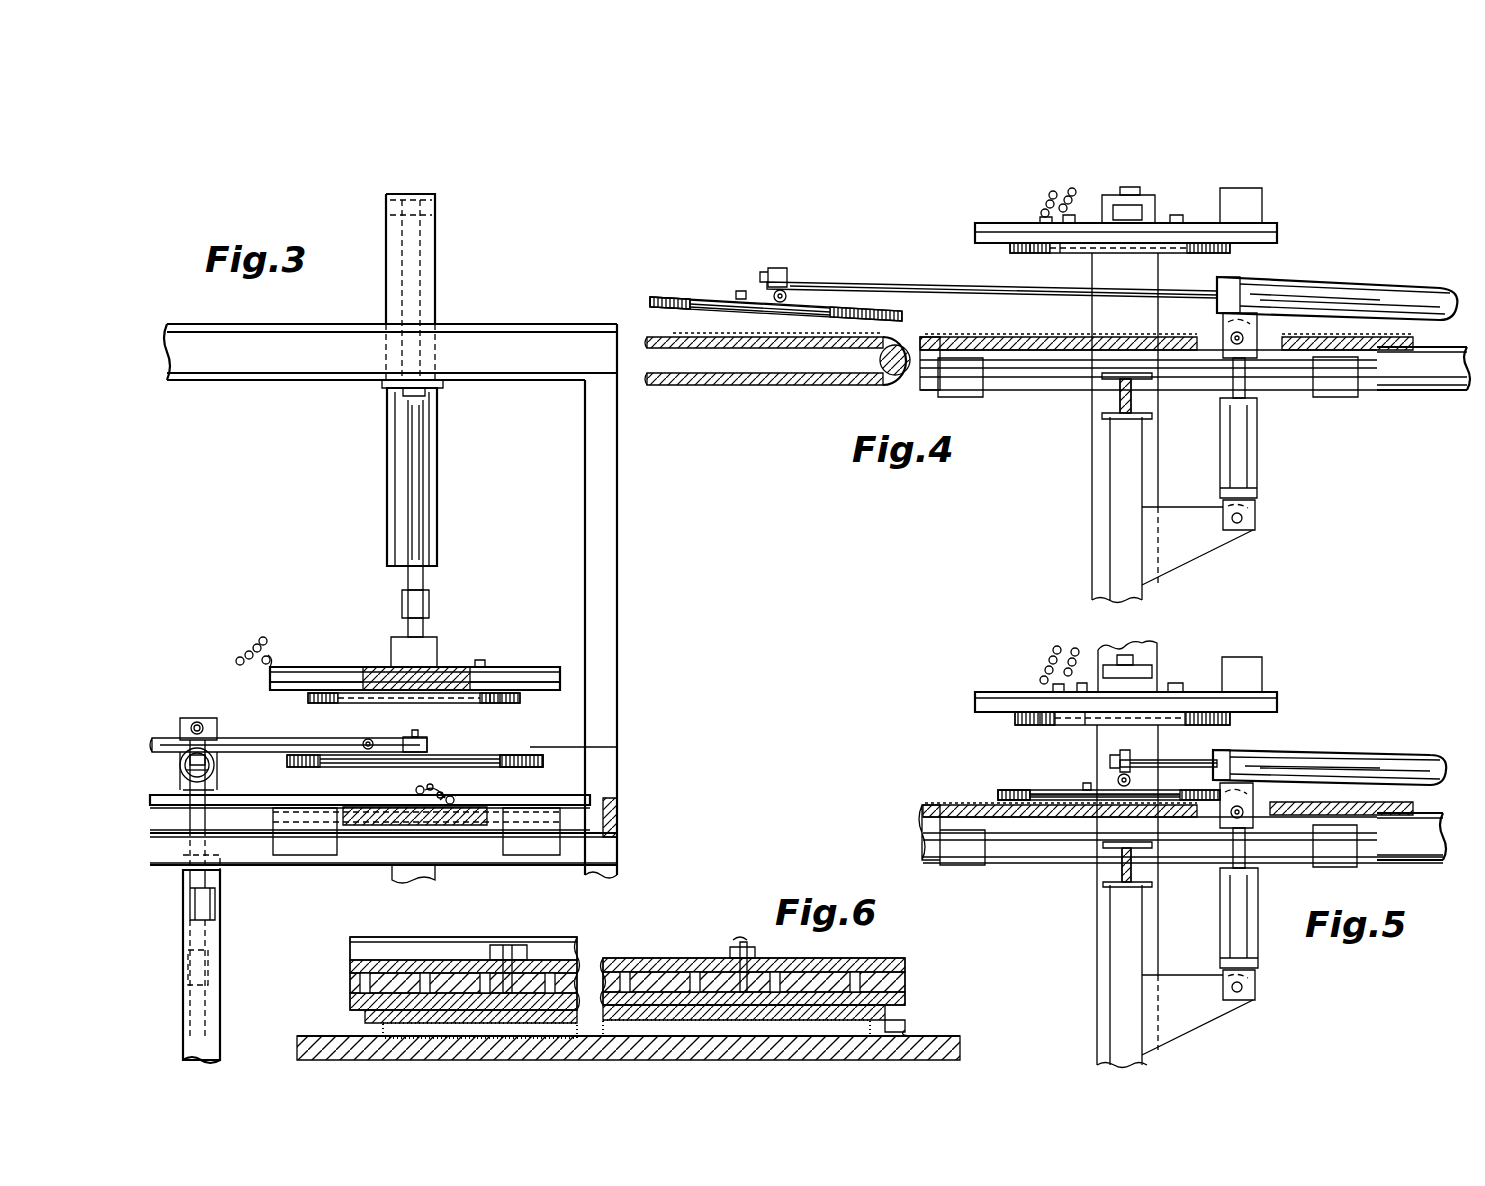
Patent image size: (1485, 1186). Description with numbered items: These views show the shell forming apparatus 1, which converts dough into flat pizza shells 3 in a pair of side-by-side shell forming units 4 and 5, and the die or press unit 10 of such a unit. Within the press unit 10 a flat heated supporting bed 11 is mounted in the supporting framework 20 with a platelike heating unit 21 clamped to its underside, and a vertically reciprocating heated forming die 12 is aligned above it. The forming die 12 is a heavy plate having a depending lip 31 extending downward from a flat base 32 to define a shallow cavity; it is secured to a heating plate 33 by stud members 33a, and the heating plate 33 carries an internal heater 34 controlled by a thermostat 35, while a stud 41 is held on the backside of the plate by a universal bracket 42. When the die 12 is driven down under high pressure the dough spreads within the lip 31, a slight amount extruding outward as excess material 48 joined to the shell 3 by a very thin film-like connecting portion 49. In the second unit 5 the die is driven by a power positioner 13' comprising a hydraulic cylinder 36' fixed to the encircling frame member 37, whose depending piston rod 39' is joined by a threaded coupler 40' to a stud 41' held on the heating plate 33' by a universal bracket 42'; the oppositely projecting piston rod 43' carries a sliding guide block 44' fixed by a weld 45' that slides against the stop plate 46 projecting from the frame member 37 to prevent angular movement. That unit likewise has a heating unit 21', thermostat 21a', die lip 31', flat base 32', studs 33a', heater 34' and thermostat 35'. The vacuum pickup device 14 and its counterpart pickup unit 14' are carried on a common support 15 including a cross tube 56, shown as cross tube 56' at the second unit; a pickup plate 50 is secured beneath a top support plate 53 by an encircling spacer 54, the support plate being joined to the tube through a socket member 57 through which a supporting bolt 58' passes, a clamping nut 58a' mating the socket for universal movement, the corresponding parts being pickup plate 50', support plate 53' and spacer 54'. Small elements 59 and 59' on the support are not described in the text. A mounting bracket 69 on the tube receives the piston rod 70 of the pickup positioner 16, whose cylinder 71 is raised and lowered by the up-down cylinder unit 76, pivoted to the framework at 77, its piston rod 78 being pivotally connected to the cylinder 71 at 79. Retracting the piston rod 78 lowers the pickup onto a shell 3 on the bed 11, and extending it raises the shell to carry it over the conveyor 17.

In FIG. 3, the shell forming apparatus 1 is at (596, 290).
In FIG. 4, the pizza shell 3 is at (698, 336).
In FIG. 5, the pizza shell 3 is at (1070, 805).
In FIG. 6, the pizza shell 3 is at (606, 1034).
In FIG. 4, the shell forming unit 4 is at (1297, 219).
In FIG. 5, the shell forming unit 4 is at (1329, 716).
In FIG. 3, the shell forming unit 5 is at (512, 622).
In FIG. 3, the press unit 10 is at (525, 662).
In FIG. 4, the press unit 10 is at (965, 225).
In FIG. 5, the press unit 10 is at (969, 684).
In FIG. 6, the press unit 10 is at (710, 953).
In FIG. 3, the flat heated supporting bed 11 is at (570, 804).
In FIG. 4, the flat heated supporting bed 11 is at (954, 338).
In FIG. 5, the flat heated supporting bed 11 is at (928, 806).
In FIG. 6, the flat heated supporting bed 11 is at (368, 1038).
In FIG. 4, the forming die 12 is at (1096, 259).
In FIG. 5, the forming die 12 is at (1090, 727).
In FIG. 6, the forming die 12 is at (592, 1002).
In FIG. 3, the power positioner 13' is at (455, 477).
In FIG. 4, the vacuum pickup device 14 is at (760, 276).
In FIG. 5, the vacuum pickup device 14 is at (1087, 773).
In FIG. 3, the pickup unit 14' is at (573, 732).
In FIG. 3, the common support 15 is at (198, 708).
In FIG. 4, the common support 15 is at (899, 280).
In FIG. 5, the common support 15 is at (1200, 759).
In FIG. 3, the power positioner 16 is at (229, 777).
In FIG. 4, the power positioner 16 is at (1428, 276).
In FIG. 5, the power positioner 16 is at (1398, 752).
In FIG. 4, the conveyor 17 is at (762, 385).
In FIG. 3, the supporting framework 20 is at (552, 870).
In FIG. 4, the supporting framework 20 is at (1429, 404).
In FIG. 5, the supporting framework 20 is at (1419, 867).
In FIG. 4, the heating unit 21 is at (1166, 326).
In FIG. 5, the heating unit 21 is at (1168, 849).
In FIG. 3, the heating unit 21' is at (415, 834).
In FIG. 3, the thermostat 21a' is at (480, 784).
In FIG. 4, the depending lip 31 is at (1038, 263).
In FIG. 5, the depending lip 31 is at (1041, 731).
In FIG. 3, the depending lip 31' is at (534, 702).
In FIG. 4, the flat base 32 is at (1075, 261).
In FIG. 5, the flat base 32 is at (1076, 730).
In FIG. 3, the flat base 32' is at (509, 709).
In FIG. 4, the heating plate 33 is at (1038, 205).
In FIG. 5, the heating plate 33 is at (1003, 705).
In FIG. 6, the heating plate 33 is at (627, 950).
In FIG. 3, the heating plate 33' is at (279, 678).
In FIG. 4, the stud members 33a is at (1138, 202).
In FIG. 5, the stud members 33a is at (1154, 651).
In FIG. 6, the stud members 33a is at (639, 932).
In FIG. 3, the stud members 33a' is at (486, 643).
In FIG. 4, the internal heater 34 is at (1274, 216).
In FIG. 5, the internal heater 34 is at (1275, 678).
In FIG. 6, the internal heater 34 is at (629, 968).
In FIG. 3, the internal heater 34' is at (567, 670).
In FIG. 4, the thermostat 35 is at (1040, 195).
In FIG. 5, the thermostat 35 is at (1038, 669).
In FIG. 6, the thermostat 35 is at (463, 929).
In FIG. 3, the thermostat 35' is at (295, 640).
In FIG. 3, the hydraulic cylinder 36' is at (382, 479).
In FIG. 3, the encircling frame member 37 is at (506, 373).
In FIG. 3, the piston rod 39' is at (381, 578).
In FIG. 3, the threaded coupler 40' is at (399, 602).
In FIG. 4, the stud 41 is at (1147, 179).
In FIG. 5, the stud 41 is at (1129, 642).
In FIG. 3, the stud 41' is at (396, 624).
In FIG. 4, the universal bracket 42 is at (1117, 193).
In FIG. 5, the universal bracket 42 is at (1137, 654).
In FIG. 3, the universal bracket 42' is at (436, 627).
In FIG. 3, the piston rod 43' is at (450, 290).
In FIG. 3, the sliding guide block 44' is at (442, 211).
In FIG. 3, the weld 45' is at (442, 190).
In FIG. 3, the stop plate 46 is at (386, 258).
In FIG. 6, the excess material 48 is at (910, 1032).
In FIG. 6, the film-like connecting portion 49 is at (895, 1022).
In FIG. 4, the pickup plate 50 is at (769, 313).
In FIG. 5, the pickup plate 50 is at (1109, 841).
In FIG. 3, the pickup plate 50' is at (415, 771).
In FIG. 4, the top support plate 53 is at (776, 294).
In FIG. 5, the top support plate 53 is at (1109, 765).
In FIG. 3, the top support plate 53' is at (415, 739).
In FIG. 4, the encircling spacer 54 is at (663, 284).
In FIG. 5, the encircling spacer 54 is at (994, 785).
In FIG. 3, the encircling spacer 54' is at (584, 749).
In FIG. 4, the cross tube 56 is at (806, 277).
In FIG. 5, the cross tube 56 is at (1137, 756).
In FIG. 3, the cross tube 56' is at (290, 727).
In FIG. 3, the socket member 57 is at (427, 745).
In FIG. 3, the supporting bolt 58' is at (422, 718).
In FIG. 3, the clamping nut 58a' is at (412, 790).
In FIG. 4, the clamp 59 is at (756, 269).
In FIG. 5, the clamp 59 is at (1071, 771).
In FIG. 3, the roller 59' is at (381, 727).
In FIG. 3, the mounting bracket 69 is at (217, 722).
In FIG. 4, the mounting bracket 69 is at (782, 268).
In FIG. 5, the mounting bracket 69 is at (1124, 750).
In FIG. 3, the piston rod 70 is at (217, 760).
In FIG. 4, the piston rod 70 is at (952, 286).
In FIG. 5, the piston rod 70 is at (1240, 758).
In FIG. 3, the cylinder 71 is at (183, 766).
In FIG. 4, the cylinder 71 is at (1366, 284).
In FIG. 5, the cylinder 71 is at (1432, 758).
In FIG. 3, the up-down hydraulic cylinder unit 76 is at (220, 905).
In FIG. 4, the up-down hydraulic cylinder unit 76 is at (1258, 452).
In FIG. 5, the up-down hydraulic cylinder unit 76 is at (1258, 905).
In FIG. 3, the pivot mounting 77 is at (212, 964).
In FIG. 4, the pivot mounting 77 is at (1262, 520).
In FIG. 5, the pivot mounting 77 is at (1243, 1000).
In FIG. 3, the piston rod 78 is at (190, 820).
In FIG. 4, the piston rod 78 is at (1235, 380).
In FIG. 5, the piston rod 78 is at (1245, 850).
In FIG. 3, the pivotal connection 79 is at (232, 818).
In FIG. 4, the pivotal connection 79 is at (1222, 316).
In FIG. 5, the pivotal connection 79 is at (1240, 812).